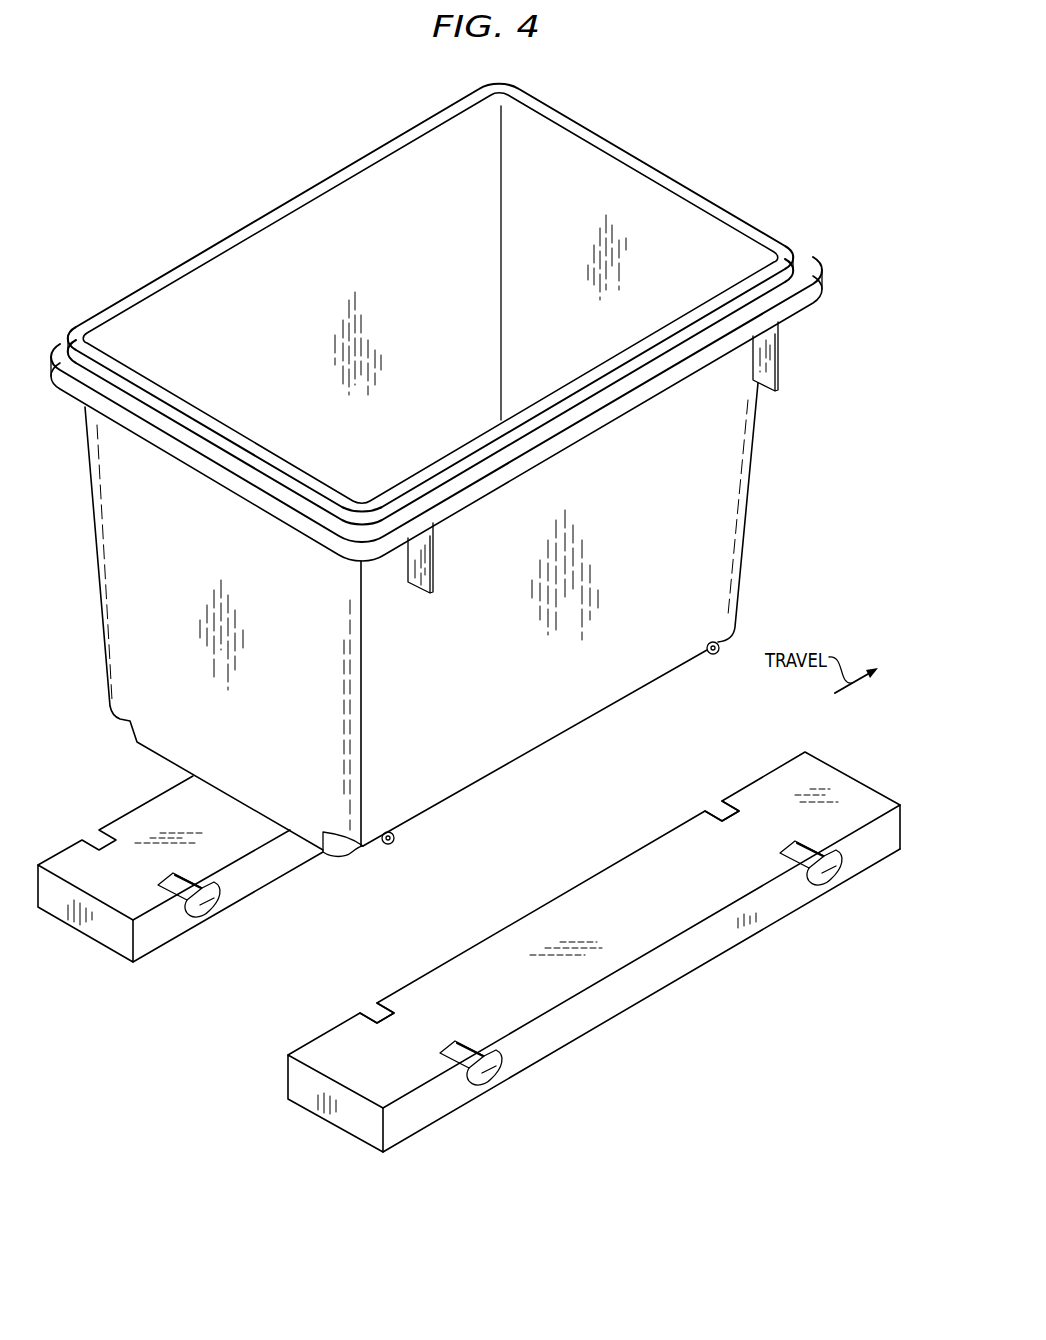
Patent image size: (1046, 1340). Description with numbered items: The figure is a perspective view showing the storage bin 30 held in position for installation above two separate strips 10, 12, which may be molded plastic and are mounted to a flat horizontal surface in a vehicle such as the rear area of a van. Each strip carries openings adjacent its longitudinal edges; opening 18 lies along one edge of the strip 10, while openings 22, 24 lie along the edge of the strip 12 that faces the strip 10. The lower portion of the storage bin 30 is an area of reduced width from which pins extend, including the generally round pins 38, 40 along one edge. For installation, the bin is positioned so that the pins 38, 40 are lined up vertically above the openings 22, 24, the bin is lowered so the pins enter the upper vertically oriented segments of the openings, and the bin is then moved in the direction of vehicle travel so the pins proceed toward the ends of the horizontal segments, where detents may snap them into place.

The strip 10 is at (130, 810).
The strip 12 is at (510, 922).
The opening 18 is at (203, 907).
The opening 22 is at (377, 1010).
The opening 24 is at (720, 810).
The storage bin 30 is at (768, 493).
The pin 38 is at (385, 855).
The pin 40 is at (713, 656).